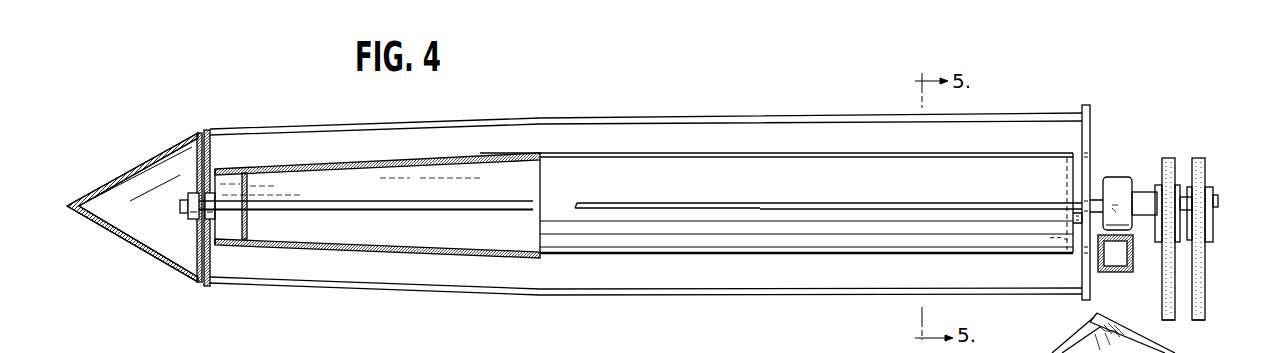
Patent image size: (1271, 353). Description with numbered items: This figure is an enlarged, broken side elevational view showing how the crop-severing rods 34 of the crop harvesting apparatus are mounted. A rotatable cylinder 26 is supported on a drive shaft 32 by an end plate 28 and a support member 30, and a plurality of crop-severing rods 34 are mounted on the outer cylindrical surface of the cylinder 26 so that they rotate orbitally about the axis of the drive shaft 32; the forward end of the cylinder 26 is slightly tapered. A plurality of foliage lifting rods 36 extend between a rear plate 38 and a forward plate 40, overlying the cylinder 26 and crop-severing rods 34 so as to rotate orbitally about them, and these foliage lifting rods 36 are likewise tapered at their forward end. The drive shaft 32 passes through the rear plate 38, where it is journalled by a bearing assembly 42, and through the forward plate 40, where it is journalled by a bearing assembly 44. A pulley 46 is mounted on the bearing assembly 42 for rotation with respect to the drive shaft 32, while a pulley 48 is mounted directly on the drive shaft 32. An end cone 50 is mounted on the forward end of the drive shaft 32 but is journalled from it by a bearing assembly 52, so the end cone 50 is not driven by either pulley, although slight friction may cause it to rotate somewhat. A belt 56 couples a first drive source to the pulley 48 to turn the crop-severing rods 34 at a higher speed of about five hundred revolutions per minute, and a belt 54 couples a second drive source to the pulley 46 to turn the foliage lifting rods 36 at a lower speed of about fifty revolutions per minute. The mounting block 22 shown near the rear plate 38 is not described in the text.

The bearing block 22 is at (1105, 273).
The rotatable cylinder 26 is at (320, 163).
The end plate 28 is at (1066, 237).
The support member 30 is at (250, 222).
The drive shaft 32 is at (450, 209).
The crop-severing rods 34 is at (622, 153).
The foliage lifting rods 36 is at (605, 117).
The rear plate 38 is at (1092, 121).
The forward plate 40 is at (201, 130).
The bearing assembly 42 is at (1077, 178).
The bearing assembly 44 is at (232, 222).
The pulley 46 is at (1171, 158).
The pulley 48 is at (1207, 173).
The end cone 50 is at (148, 261).
The bearing assembly 52 is at (191, 220).
The belt 54 is at (1172, 311).
The belt 56 is at (1207, 300).